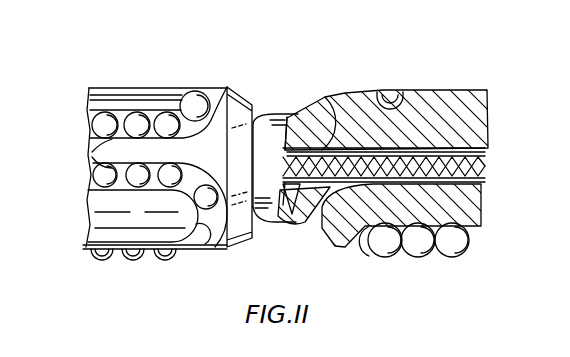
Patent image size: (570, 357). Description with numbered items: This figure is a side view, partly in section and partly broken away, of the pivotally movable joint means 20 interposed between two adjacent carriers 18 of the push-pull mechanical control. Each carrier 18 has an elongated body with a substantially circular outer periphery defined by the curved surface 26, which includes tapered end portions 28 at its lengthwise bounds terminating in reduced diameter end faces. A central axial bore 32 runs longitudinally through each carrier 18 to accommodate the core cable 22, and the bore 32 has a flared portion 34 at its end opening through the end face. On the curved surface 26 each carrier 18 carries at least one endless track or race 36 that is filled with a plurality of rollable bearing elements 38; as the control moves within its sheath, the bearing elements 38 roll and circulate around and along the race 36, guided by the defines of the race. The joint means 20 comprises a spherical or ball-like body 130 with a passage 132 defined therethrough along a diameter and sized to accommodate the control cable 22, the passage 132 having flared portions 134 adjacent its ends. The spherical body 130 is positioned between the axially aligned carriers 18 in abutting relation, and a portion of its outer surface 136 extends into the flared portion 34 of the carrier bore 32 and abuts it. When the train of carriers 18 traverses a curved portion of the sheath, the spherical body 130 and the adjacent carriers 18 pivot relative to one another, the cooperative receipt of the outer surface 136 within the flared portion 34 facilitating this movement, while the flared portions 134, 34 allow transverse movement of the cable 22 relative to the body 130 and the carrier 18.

The carrier 18 is at (126, 84).
The joint means 20 is at (291, 106).
The core cable 22 is at (483, 175).
The curved surface 26 is at (213, 250).
The tapered end portions 28 is at (245, 242).
The central axial bore 32 is at (482, 132).
The flared portion 34 is at (366, 138).
The endless track or race 36 is at (92, 152).
The rollable bearing elements 38 is at (166, 116).
The spherical body 130 is at (302, 117).
The passage 132 is at (297, 205).
The flared portions 134 is at (338, 206).
The outer surface 136 is at (268, 113).